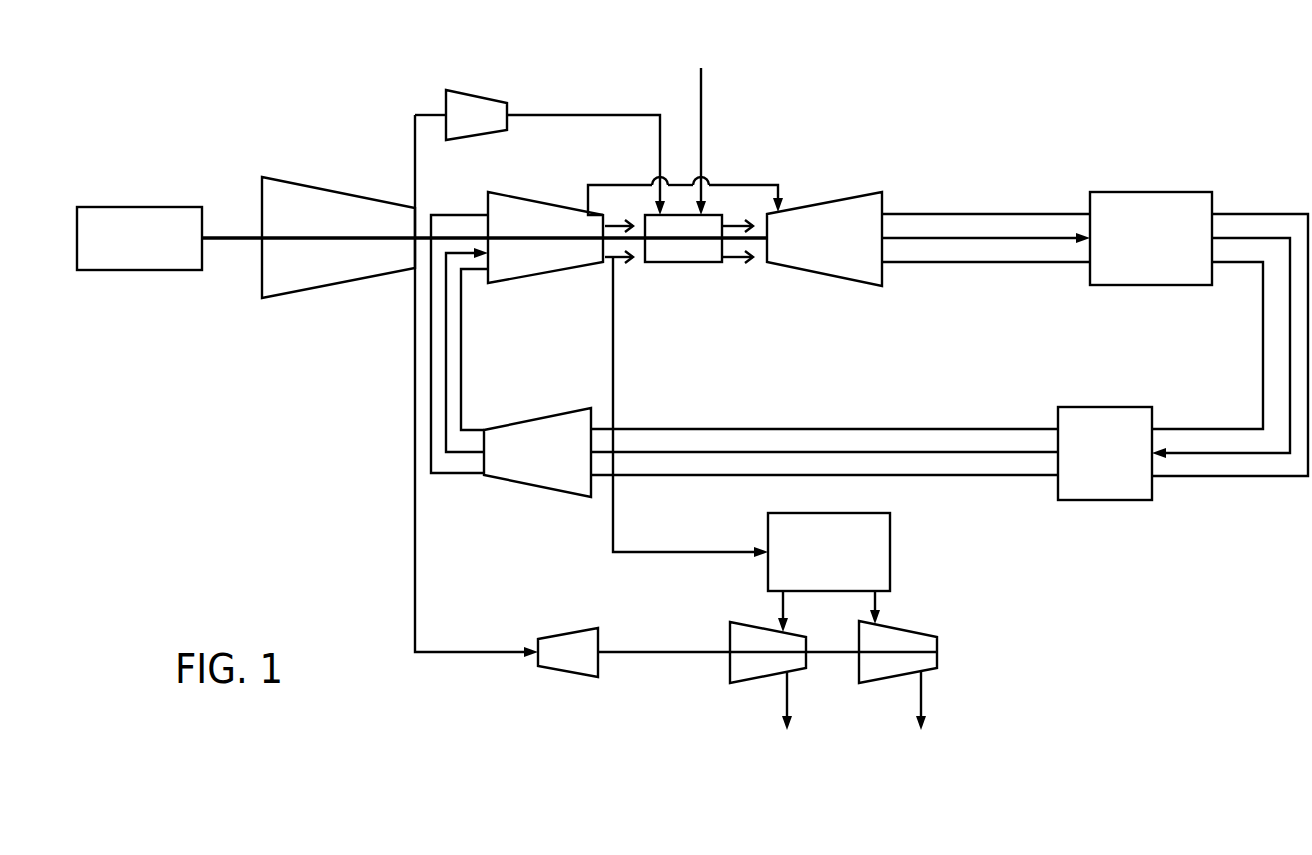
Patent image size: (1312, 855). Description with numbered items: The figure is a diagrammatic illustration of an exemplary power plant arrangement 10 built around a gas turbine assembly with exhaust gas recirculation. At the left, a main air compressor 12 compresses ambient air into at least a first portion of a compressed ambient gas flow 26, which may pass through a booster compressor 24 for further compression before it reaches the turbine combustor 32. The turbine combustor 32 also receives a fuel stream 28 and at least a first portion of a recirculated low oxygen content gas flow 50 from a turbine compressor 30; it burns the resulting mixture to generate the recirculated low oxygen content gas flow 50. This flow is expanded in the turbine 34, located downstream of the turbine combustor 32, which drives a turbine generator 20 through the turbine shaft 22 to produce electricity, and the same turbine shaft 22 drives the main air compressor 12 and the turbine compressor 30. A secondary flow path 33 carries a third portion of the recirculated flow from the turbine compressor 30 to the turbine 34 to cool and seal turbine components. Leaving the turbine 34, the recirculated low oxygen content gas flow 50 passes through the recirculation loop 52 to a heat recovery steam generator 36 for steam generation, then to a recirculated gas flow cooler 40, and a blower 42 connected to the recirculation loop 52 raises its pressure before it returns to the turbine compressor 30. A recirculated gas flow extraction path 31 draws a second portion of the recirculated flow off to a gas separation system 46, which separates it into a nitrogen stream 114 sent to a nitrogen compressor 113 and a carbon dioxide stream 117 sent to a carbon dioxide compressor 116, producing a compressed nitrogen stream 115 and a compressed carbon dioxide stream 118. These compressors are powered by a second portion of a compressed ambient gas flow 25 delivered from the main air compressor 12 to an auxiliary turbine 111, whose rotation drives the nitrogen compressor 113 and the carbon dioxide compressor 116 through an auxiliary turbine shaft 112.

The power plant arrangement 10 is at (236, 383).
The main air compressor 12 is at (323, 188).
The turbine generator 20 is at (143, 207).
The turbine shaft 22 is at (238, 240).
The booster compressor 24 is at (488, 92).
The second portion of a compressed ambient gas flow 25 is at (415, 545).
The first portion of a compressed ambient gas flow 26 is at (660, 148).
The fuel stream 28 is at (702, 145).
The turbine compressor 30 is at (547, 200).
The recirculated gas flow extraction path 31 is at (615, 347).
The turbine combustor 32 is at (708, 263).
The secondary flow path 33 is at (745, 183).
The turbine 34 is at (817, 200).
The heat recovery steam generator 36 is at (1152, 192).
The recirculated gas flow cooler 40 is at (1103, 407).
The blower 42 is at (548, 415).
The gas separation system 46 is at (829, 552).
The recirculated low oxygen content gas flow 50 is at (967, 237).
The recirculation loop 52 is at (1278, 210).
The auxiliary turbine 111 is at (568, 652).
The auxiliary turbine shaft 112 is at (675, 650).
The nitrogen compressor 113 is at (727, 668).
The nitrogen stream 114 is at (778, 618).
The compressed nitrogen stream 115 is at (788, 714).
The carbon dioxide compressor 116 is at (855, 668).
The carbon dioxide stream 117 is at (878, 603).
The compressed carbon dioxide stream 118 is at (921, 714).